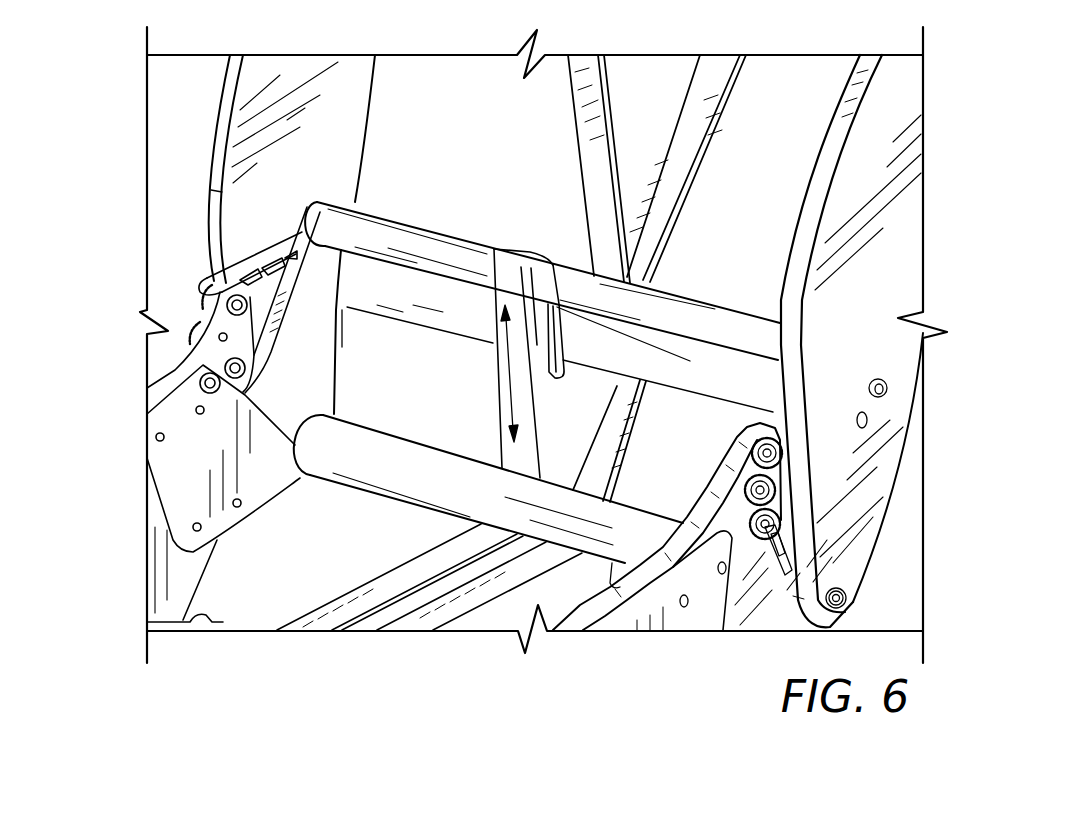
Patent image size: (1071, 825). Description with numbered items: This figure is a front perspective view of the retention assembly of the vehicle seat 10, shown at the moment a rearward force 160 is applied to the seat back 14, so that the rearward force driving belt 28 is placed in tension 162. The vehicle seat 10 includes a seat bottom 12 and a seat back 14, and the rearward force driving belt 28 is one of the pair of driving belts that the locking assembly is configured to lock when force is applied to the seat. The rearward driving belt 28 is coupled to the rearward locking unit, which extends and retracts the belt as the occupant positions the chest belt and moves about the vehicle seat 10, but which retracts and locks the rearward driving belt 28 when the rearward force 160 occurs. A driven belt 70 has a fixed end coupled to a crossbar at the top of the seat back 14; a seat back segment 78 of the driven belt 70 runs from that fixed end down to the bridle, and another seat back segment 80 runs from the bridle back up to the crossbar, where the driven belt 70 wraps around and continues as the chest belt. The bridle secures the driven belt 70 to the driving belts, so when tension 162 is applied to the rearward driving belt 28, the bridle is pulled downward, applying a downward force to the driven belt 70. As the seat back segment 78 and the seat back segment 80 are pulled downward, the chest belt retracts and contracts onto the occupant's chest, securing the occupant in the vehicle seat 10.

The vehicle seat 10 is at (797, 84).
The seat bottom 12 is at (657, 613).
The seat back 14 is at (910, 88).
The rearward force driving belt 28 is at (500, 397).
The driven belt 70 is at (677, 208).
The seat back segment 78 is at (595, 100).
The seat back segment 80 is at (688, 140).
The rearward force 160 is at (176, 92).
The tension 162 is at (514, 366).